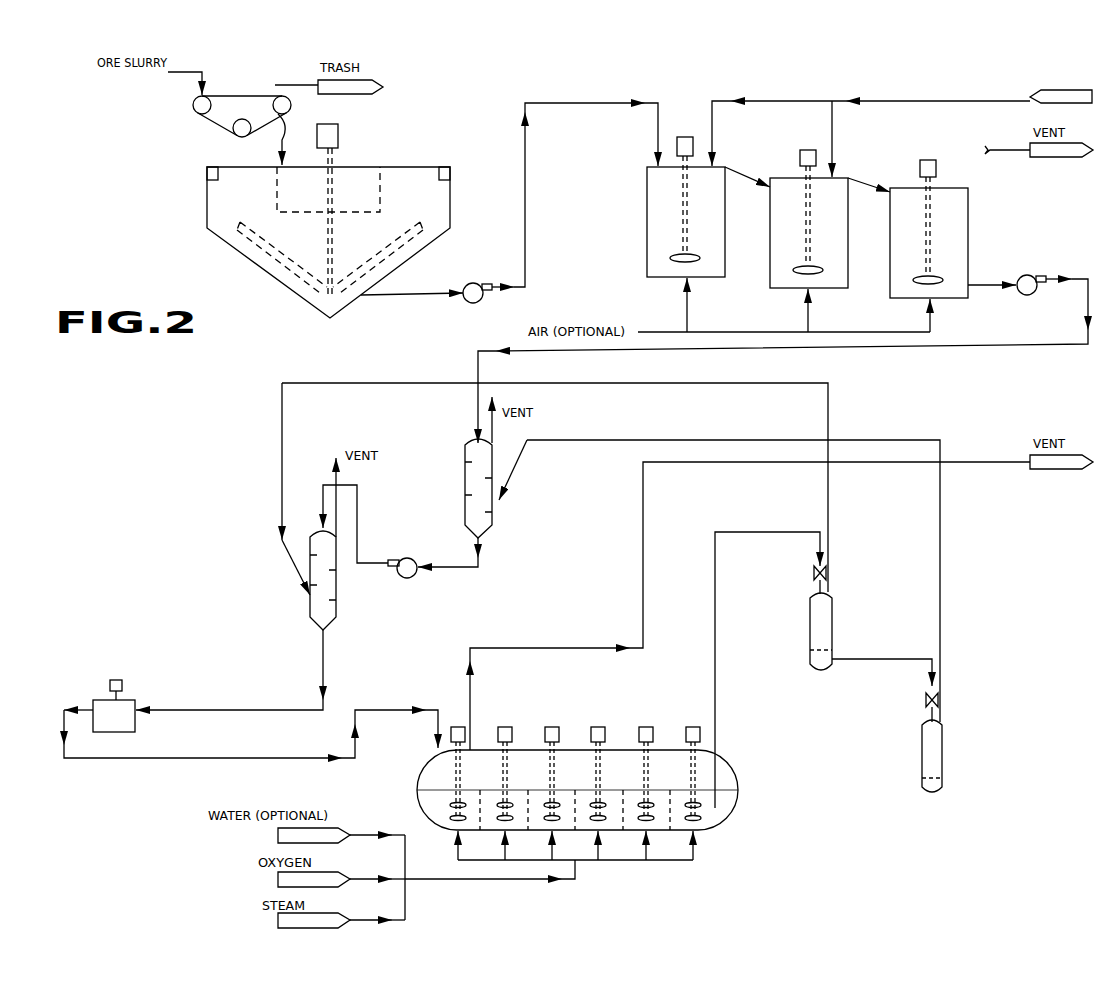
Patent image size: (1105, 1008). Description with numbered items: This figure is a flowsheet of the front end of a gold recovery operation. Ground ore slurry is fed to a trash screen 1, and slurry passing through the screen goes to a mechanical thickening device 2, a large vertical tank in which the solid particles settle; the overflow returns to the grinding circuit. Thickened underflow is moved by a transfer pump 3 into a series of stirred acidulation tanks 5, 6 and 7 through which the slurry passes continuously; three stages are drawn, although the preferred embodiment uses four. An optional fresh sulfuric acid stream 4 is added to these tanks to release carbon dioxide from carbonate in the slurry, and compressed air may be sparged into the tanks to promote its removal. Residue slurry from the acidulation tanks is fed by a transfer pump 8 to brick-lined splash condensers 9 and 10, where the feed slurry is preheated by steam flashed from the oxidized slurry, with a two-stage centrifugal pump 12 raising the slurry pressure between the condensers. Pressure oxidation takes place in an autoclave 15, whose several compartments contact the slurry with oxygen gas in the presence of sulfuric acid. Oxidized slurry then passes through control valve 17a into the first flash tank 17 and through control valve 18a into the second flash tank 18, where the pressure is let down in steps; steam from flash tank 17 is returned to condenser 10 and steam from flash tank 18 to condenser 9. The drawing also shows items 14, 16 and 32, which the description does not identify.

The trash screen 1 is at (203, 125).
The mechanical thickening device 2 is at (250, 263).
The transfer pump 3 is at (480, 283).
The fresh sulfuric acid stream 4 is at (940, 102).
The stirred acidulation tank 5 is at (645, 230).
The stirred acidulation tank 6 is at (791, 177).
The stirred acidulation tank 7 is at (968, 224).
The transfer pump 8 is at (1024, 275).
The splash condenser 9 is at (468, 444).
The splash condenser 10 is at (313, 532).
The two-stage centrifugal pump 12 is at (402, 580).
The heater / heat exchanger 14 is at (115, 732).
The autoclave 15 is at (432, 765).
The feed gas line 16 is at (465, 881).
The first flash tank 17 is at (810, 622).
The control valve 17a is at (815, 575).
The second flash tank 18 is at (922, 752).
The control valve 18a is at (926, 702).
The feed header 32 is at (407, 893).